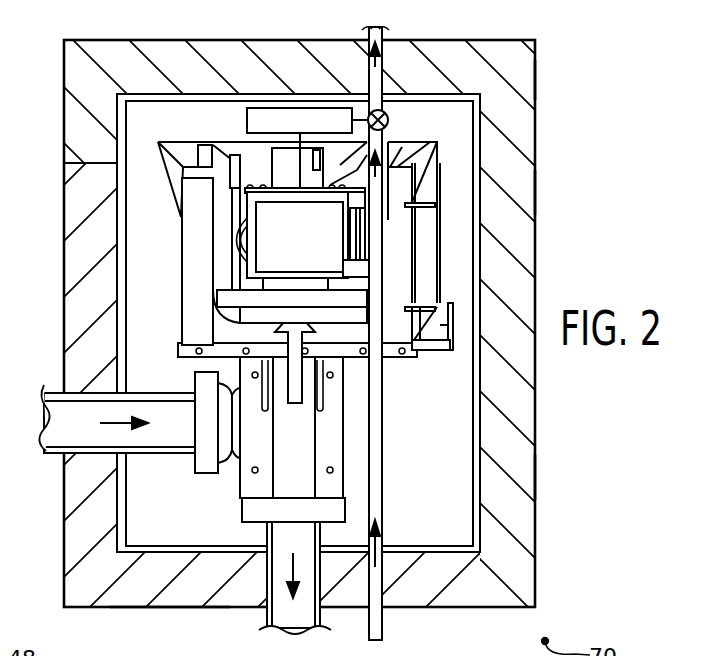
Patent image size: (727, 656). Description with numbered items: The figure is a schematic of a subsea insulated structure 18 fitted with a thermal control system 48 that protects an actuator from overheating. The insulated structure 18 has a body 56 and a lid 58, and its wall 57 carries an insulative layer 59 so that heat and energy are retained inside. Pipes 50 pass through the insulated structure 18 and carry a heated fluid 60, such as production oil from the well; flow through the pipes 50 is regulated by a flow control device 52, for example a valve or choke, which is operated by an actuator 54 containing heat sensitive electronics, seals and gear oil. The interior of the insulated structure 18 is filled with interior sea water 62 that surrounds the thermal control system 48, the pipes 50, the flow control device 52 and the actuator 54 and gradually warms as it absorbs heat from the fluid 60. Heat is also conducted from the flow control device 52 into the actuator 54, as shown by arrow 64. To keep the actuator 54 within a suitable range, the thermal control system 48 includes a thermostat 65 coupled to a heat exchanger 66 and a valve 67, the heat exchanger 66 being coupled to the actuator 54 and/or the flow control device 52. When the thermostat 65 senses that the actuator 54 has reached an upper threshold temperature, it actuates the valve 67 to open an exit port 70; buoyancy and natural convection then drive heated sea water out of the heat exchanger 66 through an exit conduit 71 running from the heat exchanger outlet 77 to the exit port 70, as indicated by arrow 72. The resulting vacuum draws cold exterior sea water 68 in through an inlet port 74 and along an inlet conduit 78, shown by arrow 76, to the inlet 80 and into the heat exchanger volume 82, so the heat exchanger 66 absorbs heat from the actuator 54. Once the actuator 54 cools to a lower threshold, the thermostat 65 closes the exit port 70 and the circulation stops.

The insulated structure 18 is at (553, 81).
The thermal control system 48 is at (397, 386).
The pipes 50 is at (189, 456).
The flow control device 52 is at (240, 370).
The actuator 54 is at (240, 254).
The body 56 is at (548, 478).
The wall 57 is at (170, 100).
The lid 58 is at (546, 194).
The insulative layer 59 is at (128, 62).
The fluid 60 is at (118, 427).
The interior sea water 62 is at (417, 461).
The arrow 64 is at (287, 347).
The thermostat 65 is at (247, 121).
The heat exchanger 66 is at (243, 206).
The valve 67 is at (389, 119).
The exterior sea water 68 is at (180, 636).
The exit port 70 is at (385, 64).
The exit conduit 71 is at (395, 158).
The arrow 72 is at (397, 177).
The inlet port 74 is at (383, 622).
The arrow 76 is at (383, 560).
The outlet 77 is at (352, 222).
The inlet conduit 78 is at (384, 486).
The inlet 80 is at (353, 268).
The heat exchanger volume 82 is at (268, 212).